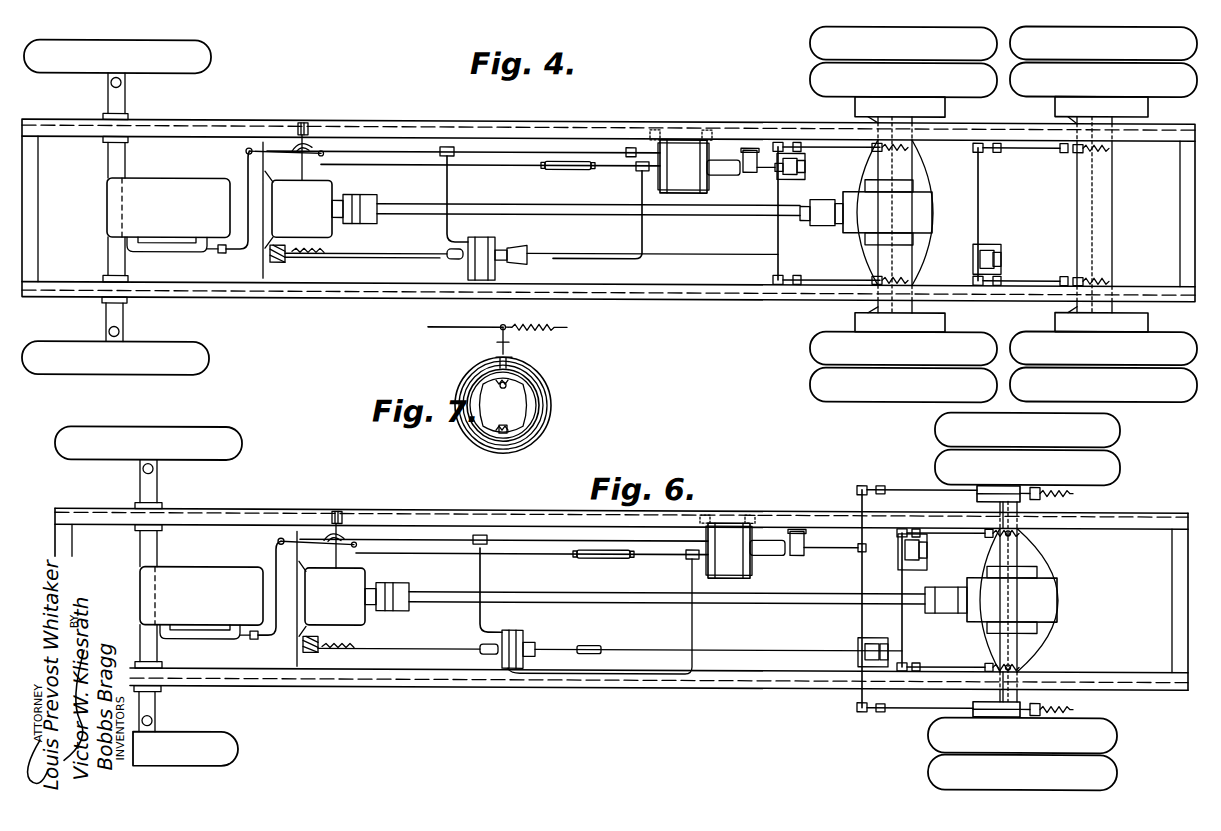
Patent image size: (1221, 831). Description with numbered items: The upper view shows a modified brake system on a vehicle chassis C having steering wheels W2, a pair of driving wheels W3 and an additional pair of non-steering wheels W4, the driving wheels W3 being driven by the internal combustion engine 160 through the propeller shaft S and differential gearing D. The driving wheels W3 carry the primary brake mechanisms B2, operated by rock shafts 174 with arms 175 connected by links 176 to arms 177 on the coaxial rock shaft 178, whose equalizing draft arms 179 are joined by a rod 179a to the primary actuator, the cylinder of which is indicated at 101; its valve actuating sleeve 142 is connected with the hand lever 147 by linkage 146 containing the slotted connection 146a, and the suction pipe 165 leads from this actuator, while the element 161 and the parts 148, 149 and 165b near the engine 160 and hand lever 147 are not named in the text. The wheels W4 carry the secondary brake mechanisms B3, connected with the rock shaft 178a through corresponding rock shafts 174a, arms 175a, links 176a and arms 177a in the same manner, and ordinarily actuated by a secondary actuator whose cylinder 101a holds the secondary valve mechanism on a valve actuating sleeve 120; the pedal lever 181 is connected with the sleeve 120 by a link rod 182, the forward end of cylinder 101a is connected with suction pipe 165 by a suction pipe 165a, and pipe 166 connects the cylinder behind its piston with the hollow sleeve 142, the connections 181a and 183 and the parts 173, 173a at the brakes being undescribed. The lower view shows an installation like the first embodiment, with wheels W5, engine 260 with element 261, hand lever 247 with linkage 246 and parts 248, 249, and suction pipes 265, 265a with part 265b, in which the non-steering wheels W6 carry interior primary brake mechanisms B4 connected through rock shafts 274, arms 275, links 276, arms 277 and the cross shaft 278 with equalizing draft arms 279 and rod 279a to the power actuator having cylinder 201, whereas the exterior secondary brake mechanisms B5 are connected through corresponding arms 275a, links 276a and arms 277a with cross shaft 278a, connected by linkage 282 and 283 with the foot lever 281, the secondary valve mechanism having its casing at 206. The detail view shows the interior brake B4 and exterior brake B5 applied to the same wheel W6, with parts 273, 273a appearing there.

In FIG. 4, the steering wheels W2 is at (211, 50).
In FIG. 4, the driving wheels W3 is at (828, 46).
In FIG. 4, the non-steering wheels W4 is at (1103, 214).
In FIG. 6, the front wheel W5 is at (242, 440).
In FIG. 6, the non-steering wheels W6 is at (945, 432).
In FIG. 4, the primary brake mechanisms B2 is at (870, 100).
In FIG. 4, the secondary brake mechanisms B3 is at (1070, 101).
In FIG. 7, the interior brake mechanisms B4 is at (535, 390).
In FIG. 7, the exterior brake mechanisms B5 is at (535, 368).
In FIG. 6, the exterior brake mechanisms B5 is at (1078, 490).
In FIG. 4, the chassis C is at (694, 288).
In FIG. 6, the chassis C is at (408, 682).
In FIG. 4, the differential gearing D is at (887, 212).
In FIG. 6, the differential gearing D is at (1040, 600).
In FIG. 4, the propeller shaft S is at (565, 206).
In FIG. 6, the propeller shaft S is at (603, 598).
In FIG. 4, the cylinder of primary actuator 101 is at (686, 180).
In FIG. 4, the cylinder of secondary actuator 101a is at (488, 248).
In FIG. 4, the valve actuating sleeve 120 is at (452, 258).
In FIG. 4, the valve actuating sleeve 142 is at (636, 146).
In FIG. 4, the linkage 146 is at (396, 166).
In FIG. 4, the slotted connection 146a is at (570, 158).
In FIG. 4, the hand lever 147 is at (272, 150).
In FIG. 4, the suction pipe 148 is at (249, 148).
In FIG. 4, the pedal lever 149 is at (310, 146).
In FIG. 4, the internal combustion engine 160 is at (168, 208).
In FIG. 4, the tank outlet tray 161 is at (167, 256).
In FIG. 4, the suction pipe 165 is at (480, 148).
In FIG. 4, the suction pipe 165a is at (449, 185).
In FIG. 4, the pipe fitting 165b is at (220, 252).
In FIG. 4, the pipe 166 is at (644, 232).
In FIG. 4, the brake spring 173 is at (904, 148).
In FIG. 4, the brake spring 173a is at (1105, 147).
In FIG. 4, the rock shafts 174 is at (845, 119).
In FIG. 4, the rock shafts 174a is at (1095, 118).
In FIG. 4, the arms 175 is at (874, 148).
In FIG. 4, the arms 175a is at (1070, 148).
In FIG. 4, the links 176 is at (822, 146).
In FIG. 4, the links 176a is at (1020, 146).
In FIG. 4, the arms 177 is at (775, 141).
In FIG. 4, the arms 177a is at (975, 150).
In FIG. 4, the rock shaft 178 is at (776, 232).
In FIG. 4, the rock shaft 178a is at (982, 180).
In FIG. 4, the equalizing draft arms 179 is at (800, 177).
In FIG. 4, the rod 179a is at (808, 172).
In FIG. 4, the pedal lever 181 is at (278, 263).
In FIG. 4, the control rod 181a is at (330, 250).
In FIG. 4, the link rod 182 is at (366, 262).
In FIG. 4, the pull rod 183 is at (590, 250).
In FIG. 6, the cylinder of power actuator 201 is at (725, 537).
In FIG. 6, the casing of secondary valve mechanism 206 is at (520, 636).
In FIG. 6, the linkage 246 is at (422, 554).
In FIG. 6, the hand lever 247 is at (320, 540).
In FIG. 6, the suction pipe 248 is at (285, 538).
In FIG. 6, the pedal lever 249 is at (350, 538).
In FIG. 6, the internal combustion engine 260 is at (201, 596).
In FIG. 6, the tank tray 261 is at (196, 640).
In FIG. 6, the suction pipe 265 is at (521, 536).
In FIG. 6, the suction pipe 265a is at (478, 632).
In FIG. 6, the pipe fitting 265b is at (253, 640).
In FIG. 6, the brake spring 273 is at (1012, 530).
In FIG. 7, the brake spring 273a is at (548, 320).
In FIG. 6, the brake spring 273a is at (1080, 494).
In FIG. 7, the rock shafts 274 is at (510, 432).
In FIG. 6, the rock shafts 274 is at (985, 530).
In FIG. 6, the arms 275 is at (1010, 664).
In FIG. 7, the arms 275a is at (500, 342).
In FIG. 6, the arms 275a is at (1003, 510).
In FIG. 6, the links 276 is at (950, 528).
In FIG. 7, the links 276a is at (462, 316).
In FIG. 6, the links 276a is at (915, 478).
In FIG. 6, the arms 277 is at (915, 524).
In FIG. 6, the arms 277a is at (872, 482).
In FIG. 6, the cross shaft 278 is at (906, 636).
In FIG. 6, the cross shaft 278a is at (860, 620).
In FIG. 6, the equalizing draft arms 279 is at (902, 568).
In FIG. 6, the rod 279a is at (928, 562).
In FIG. 6, the foot lever 281 is at (311, 653).
In FIG. 6, the linkage 282 is at (420, 641).
In FIG. 6, the linkage 283 is at (745, 641).